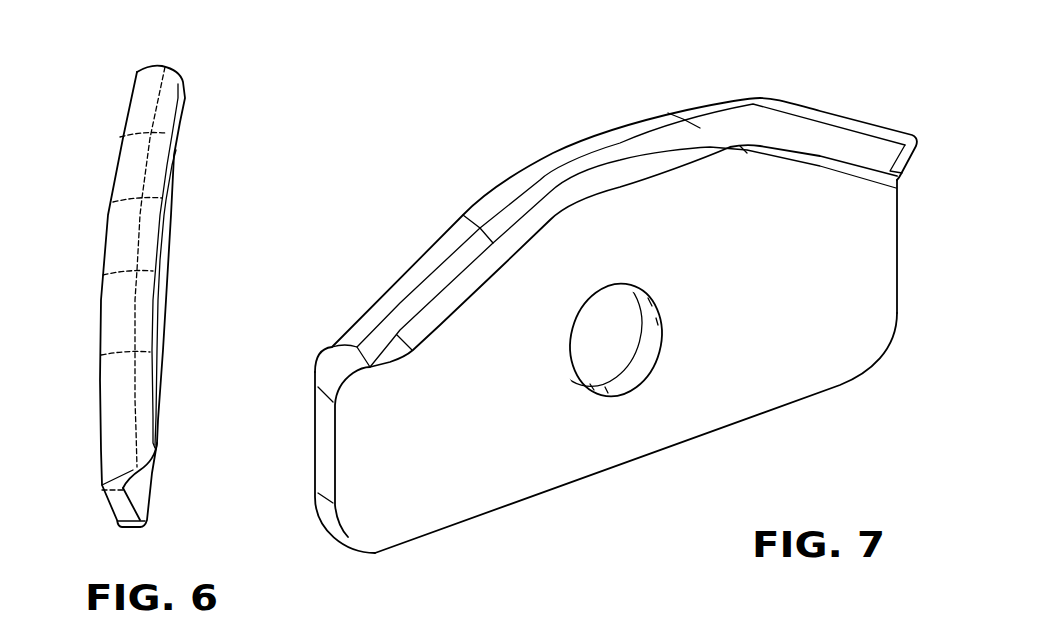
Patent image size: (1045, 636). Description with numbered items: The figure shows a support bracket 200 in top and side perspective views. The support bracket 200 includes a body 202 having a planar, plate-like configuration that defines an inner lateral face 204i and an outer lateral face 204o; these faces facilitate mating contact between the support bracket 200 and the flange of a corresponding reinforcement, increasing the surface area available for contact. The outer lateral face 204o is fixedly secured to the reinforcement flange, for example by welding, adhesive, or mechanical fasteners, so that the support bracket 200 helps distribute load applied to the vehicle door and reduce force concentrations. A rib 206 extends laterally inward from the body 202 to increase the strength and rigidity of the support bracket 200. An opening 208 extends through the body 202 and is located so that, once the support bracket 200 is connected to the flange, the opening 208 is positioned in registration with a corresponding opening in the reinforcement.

In FIG. 6, the support bracket 200 is at (211, 76).
In FIG. 7, the support bracket 200 is at (713, 80).
In FIG. 6, the body 202 is at (167, 508).
In FIG. 7, the body 202 is at (807, 341).
In FIG. 6, the inner lateral face 204i is at (140, 480).
In FIG. 7, the inner lateral face 204i is at (863, 268).
In FIG. 6, the outer lateral face 204o is at (112, 508).
In FIG. 7, the outer lateral face 204o is at (315, 466).
In FIG. 6, the rib 206 is at (147, 242).
In FIG. 7, the rib 206 is at (805, 137).
In FIG. 7, the opening 208 is at (612, 340).